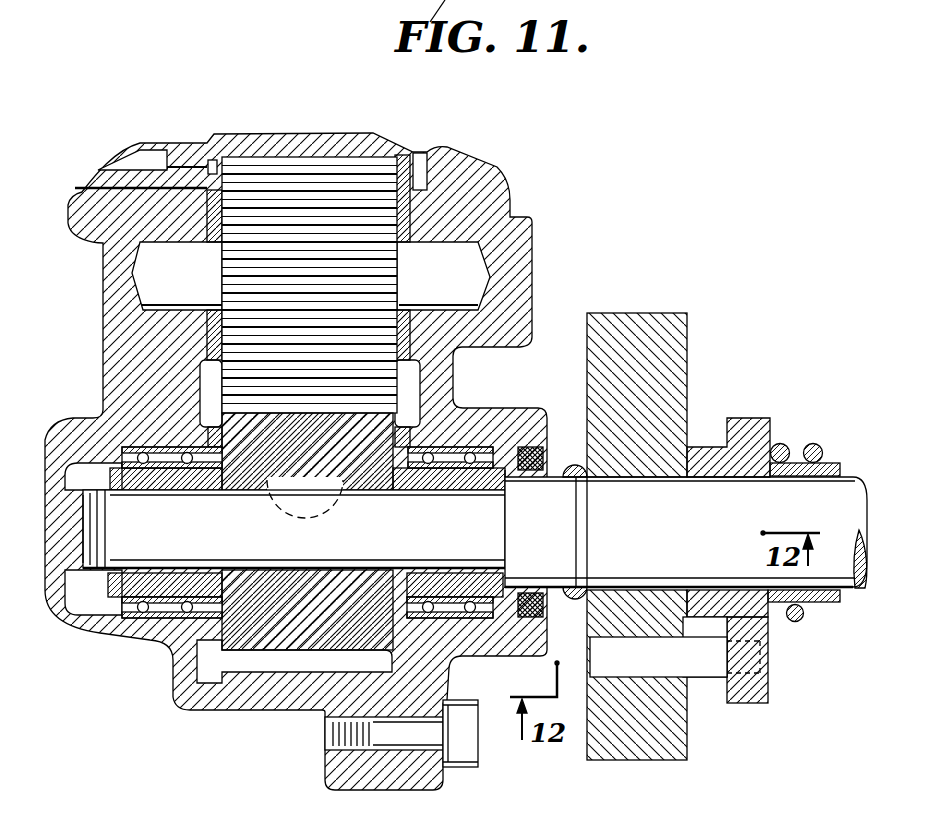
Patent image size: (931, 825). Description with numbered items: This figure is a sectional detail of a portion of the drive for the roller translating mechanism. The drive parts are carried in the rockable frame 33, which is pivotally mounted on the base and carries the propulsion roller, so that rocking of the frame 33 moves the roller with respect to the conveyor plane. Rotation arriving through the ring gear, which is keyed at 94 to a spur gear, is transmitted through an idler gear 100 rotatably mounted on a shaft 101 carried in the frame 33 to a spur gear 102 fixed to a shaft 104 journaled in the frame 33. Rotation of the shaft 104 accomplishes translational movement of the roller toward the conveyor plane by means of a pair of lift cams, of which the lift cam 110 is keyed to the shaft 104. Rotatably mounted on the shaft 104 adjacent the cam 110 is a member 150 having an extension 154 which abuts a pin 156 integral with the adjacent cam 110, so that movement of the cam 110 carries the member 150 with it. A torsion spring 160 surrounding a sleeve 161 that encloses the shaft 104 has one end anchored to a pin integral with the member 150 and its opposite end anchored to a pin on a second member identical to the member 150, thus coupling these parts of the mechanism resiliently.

The rockable frame 33 is at (182, 674).
The key 94 is at (214, 168).
The idler gear 100 is at (387, 186).
The shaft 101 is at (458, 270).
The spur gear 102 is at (307, 531).
The shaft 104 is at (294, 524).
The lift cam 110 is at (645, 323).
The member 150 is at (731, 586).
The extension 154 is at (758, 695).
The pin 156 is at (699, 665).
The torsion spring 160 is at (787, 447).
The sleeve 161 is at (814, 603).